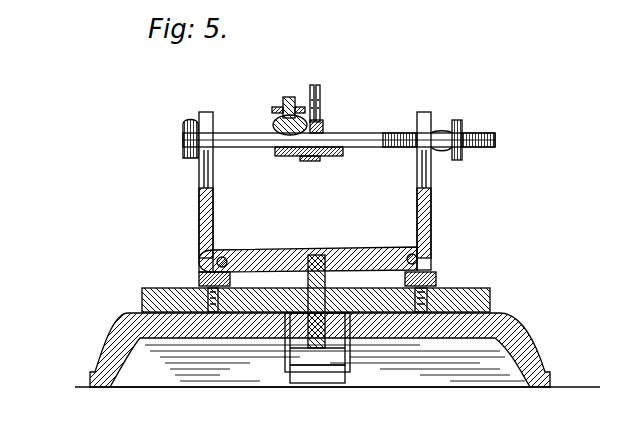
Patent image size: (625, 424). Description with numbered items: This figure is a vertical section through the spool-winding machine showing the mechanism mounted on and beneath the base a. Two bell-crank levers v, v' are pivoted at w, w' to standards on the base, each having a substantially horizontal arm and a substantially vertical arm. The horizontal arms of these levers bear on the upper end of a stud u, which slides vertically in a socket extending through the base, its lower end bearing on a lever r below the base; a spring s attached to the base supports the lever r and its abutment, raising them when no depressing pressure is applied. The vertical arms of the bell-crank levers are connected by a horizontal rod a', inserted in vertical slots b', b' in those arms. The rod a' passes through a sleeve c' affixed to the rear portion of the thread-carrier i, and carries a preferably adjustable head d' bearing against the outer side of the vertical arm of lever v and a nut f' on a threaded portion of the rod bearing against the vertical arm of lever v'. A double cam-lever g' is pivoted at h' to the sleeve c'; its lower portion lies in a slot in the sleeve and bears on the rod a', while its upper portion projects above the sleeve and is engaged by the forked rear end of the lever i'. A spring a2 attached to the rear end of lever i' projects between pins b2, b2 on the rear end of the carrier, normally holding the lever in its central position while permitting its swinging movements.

The base a is at (320, 327).
The horizontal rod a' is at (339, 127).
The spring a2 is at (322, 106).
The vertical slots b' is at (332, 192).
The pins b2 is at (321, 92).
The sleeve c' is at (313, 160).
The head d' is at (179, 151).
The nut f' is at (461, 132).
The double cam-lever g' is at (281, 102).
The pivot h' is at (271, 124).
The thread-carrier i is at (326, 120).
The lever i' is at (305, 94).
The lever r is at (345, 360).
The spring s is at (345, 370).
The stud u is at (304, 282).
The bell-crank lever v is at (227, 217).
The bell-crank lever v' is at (405, 211).
The pivot w is at (308, 252).
The pivot w' is at (402, 247).